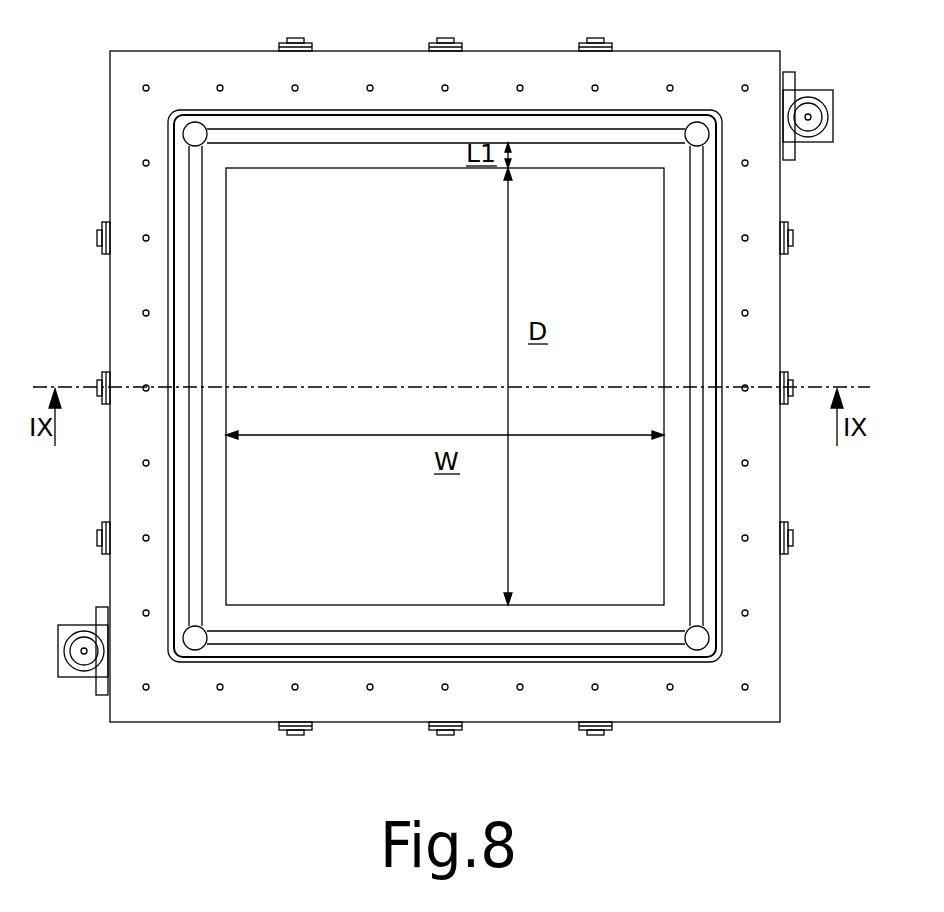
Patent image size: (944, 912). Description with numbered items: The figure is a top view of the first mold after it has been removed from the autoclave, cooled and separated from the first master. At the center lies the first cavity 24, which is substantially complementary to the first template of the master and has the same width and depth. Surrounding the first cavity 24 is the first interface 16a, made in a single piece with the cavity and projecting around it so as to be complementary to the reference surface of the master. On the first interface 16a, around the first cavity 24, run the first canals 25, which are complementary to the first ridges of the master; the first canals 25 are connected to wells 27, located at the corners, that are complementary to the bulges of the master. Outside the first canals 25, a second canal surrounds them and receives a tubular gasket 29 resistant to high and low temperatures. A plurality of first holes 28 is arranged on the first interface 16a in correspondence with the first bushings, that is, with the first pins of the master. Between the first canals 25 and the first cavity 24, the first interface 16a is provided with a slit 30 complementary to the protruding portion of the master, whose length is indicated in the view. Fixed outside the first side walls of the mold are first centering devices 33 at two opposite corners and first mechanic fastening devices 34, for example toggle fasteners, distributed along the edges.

The first interface 16a is at (347, 62).
The first cavity 24 is at (379, 280).
The first canals 25 is at (401, 133).
The wells 27 is at (193, 126).
The first holes 28 is at (295, 84).
The tubular gasket 29 is at (487, 113).
The slit 30 is at (528, 155).
The first centering devices 33 is at (810, 112).
The first mechanic fastening devices 34 is at (304, 38).